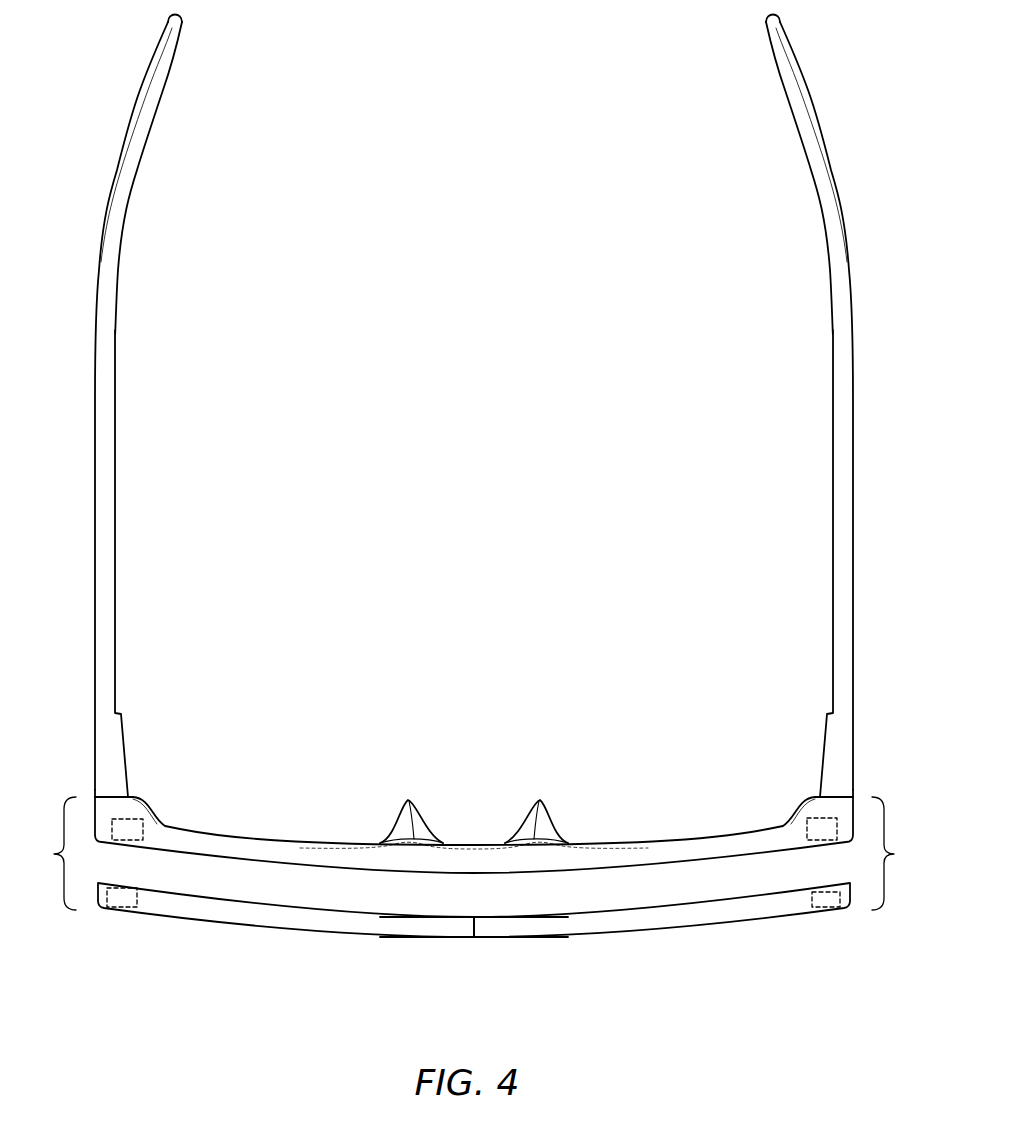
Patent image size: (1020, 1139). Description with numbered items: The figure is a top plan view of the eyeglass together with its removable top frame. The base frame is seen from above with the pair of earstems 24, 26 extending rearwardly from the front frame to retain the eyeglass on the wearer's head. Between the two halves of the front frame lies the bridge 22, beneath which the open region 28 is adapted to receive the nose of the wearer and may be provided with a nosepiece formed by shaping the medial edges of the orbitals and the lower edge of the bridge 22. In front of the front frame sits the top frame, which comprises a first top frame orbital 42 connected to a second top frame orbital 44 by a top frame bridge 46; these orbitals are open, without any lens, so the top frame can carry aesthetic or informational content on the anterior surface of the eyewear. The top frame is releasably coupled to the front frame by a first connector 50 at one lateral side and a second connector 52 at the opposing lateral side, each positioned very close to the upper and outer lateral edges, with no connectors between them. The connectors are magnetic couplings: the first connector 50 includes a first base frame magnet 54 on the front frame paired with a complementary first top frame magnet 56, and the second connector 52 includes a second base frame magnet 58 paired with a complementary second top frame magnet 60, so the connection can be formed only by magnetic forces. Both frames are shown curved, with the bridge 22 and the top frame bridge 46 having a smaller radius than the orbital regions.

The bridge 22 is at (478, 867).
The earstem 24 is at (845, 311).
The earstem 26 is at (103, 311).
The open region 28 is at (462, 816).
The first top frame orbital 42 is at (668, 922).
The second top frame orbital 44 is at (280, 922).
The top frame bridge 46 is at (473, 932).
The first connector 50 is at (45, 853).
The second connector 52 is at (903, 853).
The first base frame magnet 54 is at (126, 832).
The first top frame magnet 56 is at (118, 905).
The second base frame magnet 58 is at (822, 832).
The second top frame magnet 60 is at (830, 898).